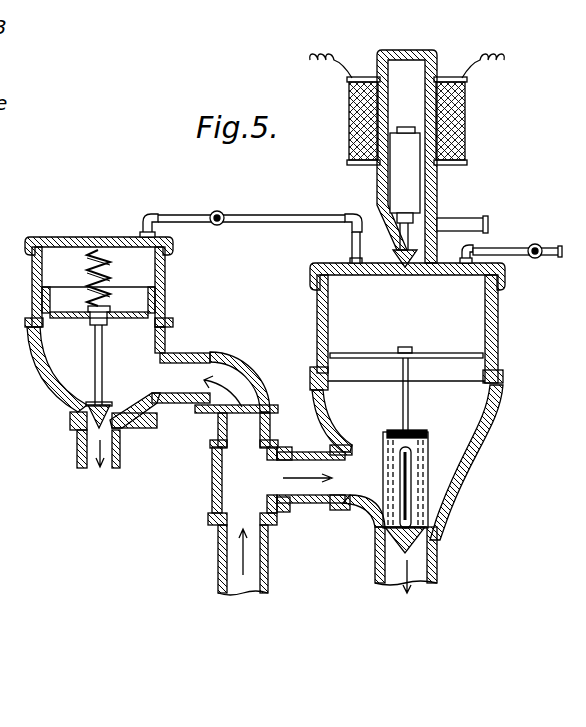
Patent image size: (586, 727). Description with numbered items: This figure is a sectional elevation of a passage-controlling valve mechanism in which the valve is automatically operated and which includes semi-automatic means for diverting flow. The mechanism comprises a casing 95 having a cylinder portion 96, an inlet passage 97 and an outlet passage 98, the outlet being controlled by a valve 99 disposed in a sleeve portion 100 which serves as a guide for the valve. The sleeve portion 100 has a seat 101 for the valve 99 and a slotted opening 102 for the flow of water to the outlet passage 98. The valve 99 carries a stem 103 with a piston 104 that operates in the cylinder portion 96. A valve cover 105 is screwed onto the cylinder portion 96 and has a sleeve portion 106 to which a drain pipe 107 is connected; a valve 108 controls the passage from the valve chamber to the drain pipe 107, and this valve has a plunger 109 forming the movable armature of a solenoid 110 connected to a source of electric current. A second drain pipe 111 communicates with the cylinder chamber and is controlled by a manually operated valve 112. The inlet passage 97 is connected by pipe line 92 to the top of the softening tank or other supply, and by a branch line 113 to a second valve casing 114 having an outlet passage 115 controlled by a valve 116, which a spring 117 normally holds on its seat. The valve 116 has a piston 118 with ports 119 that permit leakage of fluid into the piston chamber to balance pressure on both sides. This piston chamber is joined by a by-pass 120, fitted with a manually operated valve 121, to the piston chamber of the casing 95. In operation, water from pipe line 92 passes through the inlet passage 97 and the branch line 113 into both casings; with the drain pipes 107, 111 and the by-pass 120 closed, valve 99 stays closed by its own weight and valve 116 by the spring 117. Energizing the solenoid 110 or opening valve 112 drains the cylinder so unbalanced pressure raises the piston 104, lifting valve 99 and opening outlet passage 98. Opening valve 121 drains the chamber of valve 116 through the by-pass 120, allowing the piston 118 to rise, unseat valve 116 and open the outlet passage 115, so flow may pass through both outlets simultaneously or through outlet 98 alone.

The pipe line 92 is at (253, 571).
The casing 95 is at (496, 407).
The cylinder portion 96 is at (498, 330).
The inlet passage 97 is at (334, 490).
The outlet passage 98 is at (417, 573).
The valve 99 is at (420, 432).
The sleeve portion 100 is at (427, 478).
The seat 101 is at (447, 537).
The slotted opening 102 is at (409, 478).
The stem 103 is at (410, 402).
The piston 104 is at (470, 358).
The valve cover 105 is at (503, 283).
The sleeve portion 106 is at (437, 204).
The drain pipe 107 is at (482, 224).
The valve 108 is at (400, 251).
The plunger 109 is at (400, 153).
The solenoid 110 is at (465, 138).
The drain pipe 111 is at (507, 247).
The manually operated valve 112 is at (540, 259).
The branch line 113 is at (247, 376).
The valve casing 114 is at (53, 387).
The outlet passage 115 is at (105, 464).
The valve 116 is at (110, 424).
The spring 117 is at (110, 270).
The piston 118 is at (167, 312).
The ports 119 is at (135, 318).
The by-pass 120 is at (282, 225).
The manually operated valve 121 is at (230, 201).